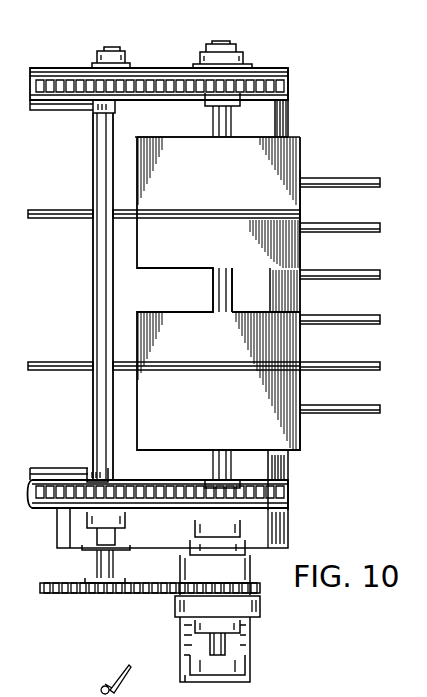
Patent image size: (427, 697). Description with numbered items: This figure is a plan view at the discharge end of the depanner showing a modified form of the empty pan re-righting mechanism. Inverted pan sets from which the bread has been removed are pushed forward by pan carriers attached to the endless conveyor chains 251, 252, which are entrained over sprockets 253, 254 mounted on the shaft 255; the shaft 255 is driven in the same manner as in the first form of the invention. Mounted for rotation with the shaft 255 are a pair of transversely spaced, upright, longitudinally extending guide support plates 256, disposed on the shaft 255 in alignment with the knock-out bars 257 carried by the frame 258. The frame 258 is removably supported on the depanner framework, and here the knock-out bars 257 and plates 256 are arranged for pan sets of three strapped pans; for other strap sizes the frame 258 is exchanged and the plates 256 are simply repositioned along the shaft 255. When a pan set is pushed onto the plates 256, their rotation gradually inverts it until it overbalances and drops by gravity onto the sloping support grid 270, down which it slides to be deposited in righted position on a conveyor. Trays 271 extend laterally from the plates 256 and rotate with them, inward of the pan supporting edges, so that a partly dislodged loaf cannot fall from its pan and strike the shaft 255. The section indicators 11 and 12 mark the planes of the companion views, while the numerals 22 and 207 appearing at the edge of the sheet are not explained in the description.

The endless conveyor chain 251 is at (160, 498).
The endless conveyor chain 252 is at (147, 80).
The sprocket 253 is at (280, 500).
The sprocket 254 is at (290, 89).
The shaft 255 is at (223, 469).
The guide support plate 256 is at (144, 212).
The knock-out bar 257 is at (34, 219).
The frame 258 is at (100, 182).
The sloping support grid 270 is at (362, 180).
The tray 271 is at (287, 160).
The section line 12- 12 is at (178, 125).
The section line 11- 11 is at (163, 289).
The frame member 22 is at (412, 379).
The frame 207 is at (412, 461).